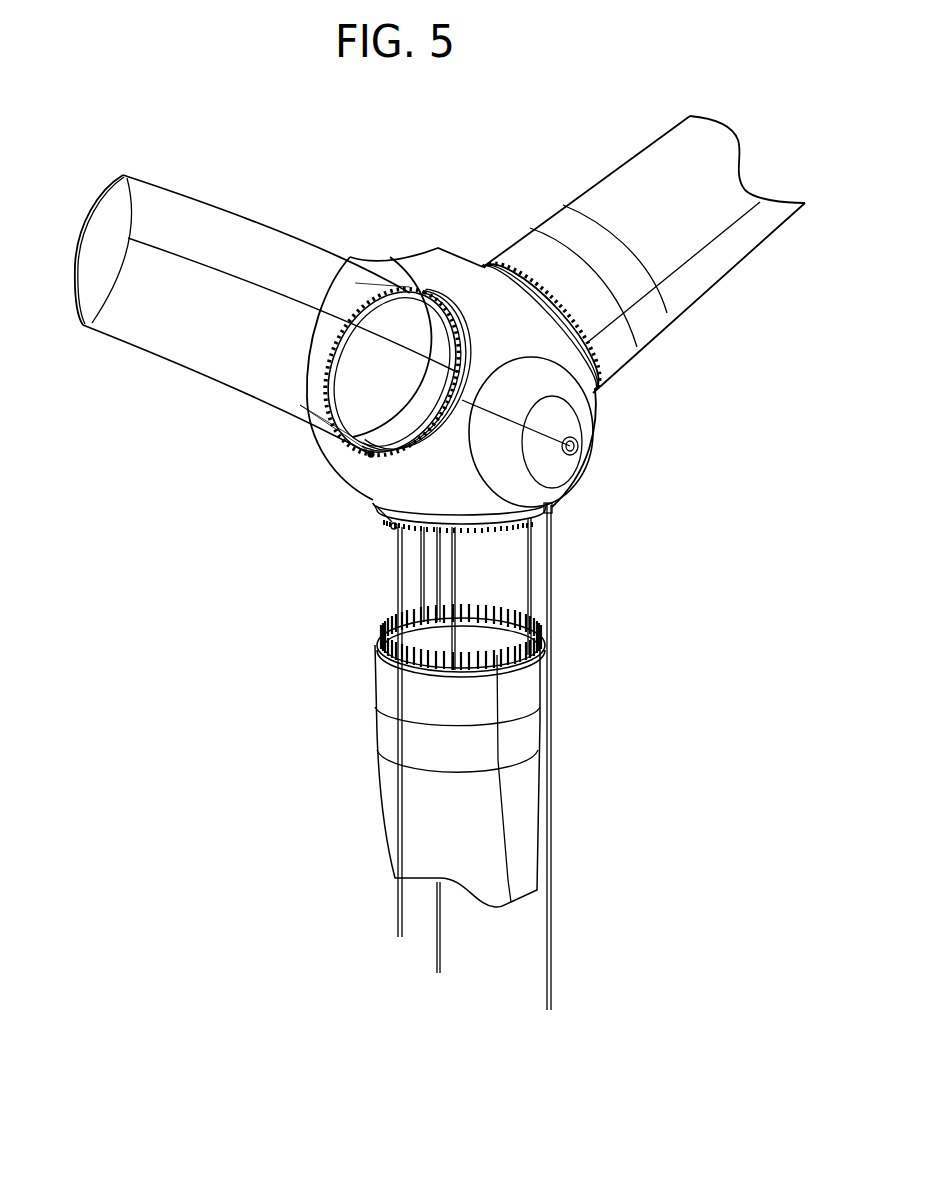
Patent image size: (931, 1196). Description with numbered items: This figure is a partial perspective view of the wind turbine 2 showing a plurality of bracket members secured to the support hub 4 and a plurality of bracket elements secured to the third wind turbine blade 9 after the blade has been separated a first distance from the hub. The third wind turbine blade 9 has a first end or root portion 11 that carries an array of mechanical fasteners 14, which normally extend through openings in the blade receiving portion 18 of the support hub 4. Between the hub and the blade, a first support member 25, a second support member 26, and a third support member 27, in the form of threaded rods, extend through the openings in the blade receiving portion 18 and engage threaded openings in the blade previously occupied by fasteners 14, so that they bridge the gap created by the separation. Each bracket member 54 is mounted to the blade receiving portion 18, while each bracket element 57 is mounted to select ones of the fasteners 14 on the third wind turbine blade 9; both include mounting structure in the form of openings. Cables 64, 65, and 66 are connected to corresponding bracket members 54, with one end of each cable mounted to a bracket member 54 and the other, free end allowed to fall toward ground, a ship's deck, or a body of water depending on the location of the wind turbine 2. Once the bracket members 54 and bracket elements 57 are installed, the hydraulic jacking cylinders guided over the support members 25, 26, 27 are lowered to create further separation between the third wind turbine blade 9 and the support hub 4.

The wind turbine 2 is at (206, 398).
The support hub 4 is at (424, 258).
The third wind turbine blade 9 is at (409, 776).
The first end or root portion 11 is at (370, 712).
The mechanical fasteners 14 is at (504, 604).
The blade receiving portion 18 is at (368, 508).
The first support member 25 is at (415, 580).
The second support member 26 is at (459, 567).
The third support member 27 is at (537, 568).
The bracket member 54 is at (564, 505).
The bracket element 57 is at (555, 661).
The cable 64 is at (507, 622).
The cable 65 is at (393, 912).
The cable 66 is at (448, 967).